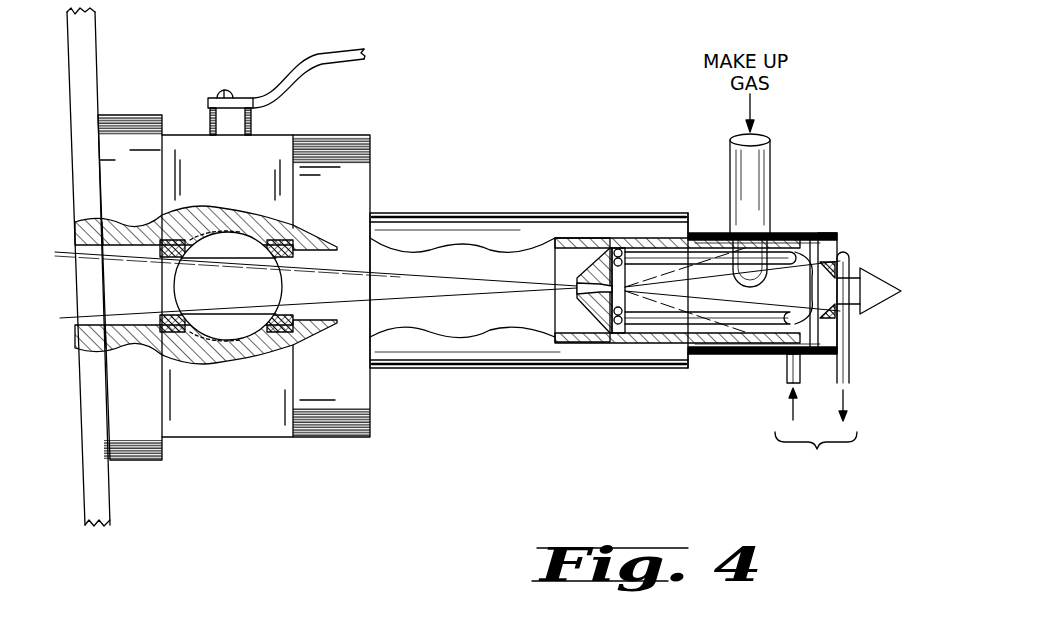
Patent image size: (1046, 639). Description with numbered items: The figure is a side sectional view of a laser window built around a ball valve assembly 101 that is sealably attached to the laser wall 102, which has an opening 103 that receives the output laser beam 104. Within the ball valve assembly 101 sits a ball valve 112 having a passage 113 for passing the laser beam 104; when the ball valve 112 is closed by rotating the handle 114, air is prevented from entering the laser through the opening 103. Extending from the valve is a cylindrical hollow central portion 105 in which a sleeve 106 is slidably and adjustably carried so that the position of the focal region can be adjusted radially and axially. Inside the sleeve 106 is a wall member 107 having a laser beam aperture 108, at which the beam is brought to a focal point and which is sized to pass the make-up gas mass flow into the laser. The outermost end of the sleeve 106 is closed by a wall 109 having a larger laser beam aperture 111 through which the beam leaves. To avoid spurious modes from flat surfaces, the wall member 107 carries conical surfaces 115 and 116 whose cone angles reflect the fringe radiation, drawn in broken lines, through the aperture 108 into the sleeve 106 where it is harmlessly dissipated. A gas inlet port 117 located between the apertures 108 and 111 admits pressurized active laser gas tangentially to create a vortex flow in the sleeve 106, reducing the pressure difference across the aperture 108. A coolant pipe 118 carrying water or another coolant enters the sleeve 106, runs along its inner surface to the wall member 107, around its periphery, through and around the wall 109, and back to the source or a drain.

The ball valve assembly 101 is at (345, 135).
The laser wall 102 is at (109, 494).
The opening 103 is at (78, 292).
The output laser beam 104 is at (130, 312).
The cylindrical hollow central portion 105 is at (425, 213).
The sleeve 106 is at (704, 354).
The wall member 107 is at (626, 258).
The laser beam aperture 108 is at (630, 340).
The wall 109 is at (840, 242).
The laser beam aperture 111 is at (814, 270).
The ball valve 112 is at (228, 287).
The passage 113 is at (222, 262).
The handle 114 is at (336, 60).
The conical surface 115 is at (570, 268).
The conical surface 116 is at (590, 292).
The gas inlet port 117 is at (738, 272).
The coolant pipe 118 is at (849, 340).